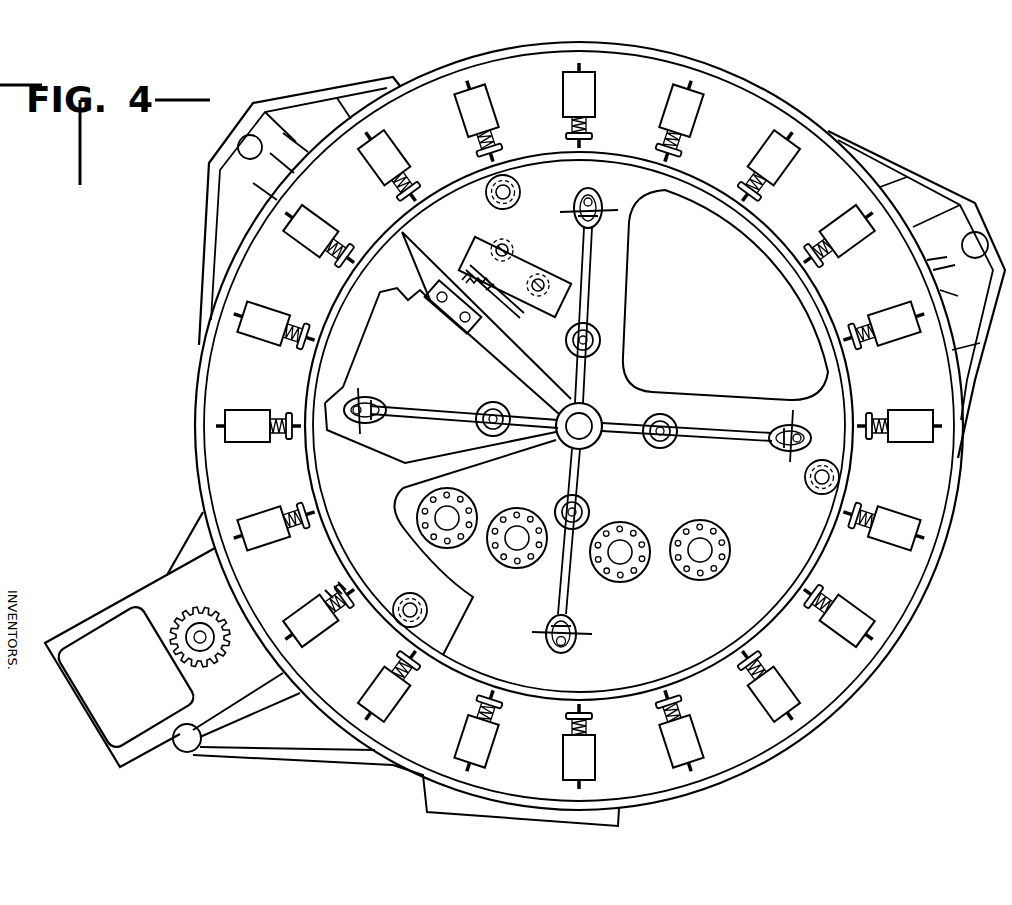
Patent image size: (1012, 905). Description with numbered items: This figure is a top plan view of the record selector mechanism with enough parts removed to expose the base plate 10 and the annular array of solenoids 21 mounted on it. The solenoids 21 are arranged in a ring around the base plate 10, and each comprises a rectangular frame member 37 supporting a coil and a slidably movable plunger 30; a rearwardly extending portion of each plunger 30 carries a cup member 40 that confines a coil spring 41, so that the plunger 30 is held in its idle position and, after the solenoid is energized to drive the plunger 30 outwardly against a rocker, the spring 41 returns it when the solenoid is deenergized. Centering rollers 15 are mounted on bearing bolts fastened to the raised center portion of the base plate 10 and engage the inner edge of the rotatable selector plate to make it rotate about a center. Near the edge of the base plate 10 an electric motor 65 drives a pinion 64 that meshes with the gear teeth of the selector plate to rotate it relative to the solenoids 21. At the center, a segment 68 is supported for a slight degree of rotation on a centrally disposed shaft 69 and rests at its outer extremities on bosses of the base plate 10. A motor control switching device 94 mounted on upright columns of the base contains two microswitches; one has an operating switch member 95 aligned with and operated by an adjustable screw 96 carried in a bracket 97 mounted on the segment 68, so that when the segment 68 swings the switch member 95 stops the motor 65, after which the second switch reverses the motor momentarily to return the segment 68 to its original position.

The base plate 10 is at (204, 333).
The centering rollers 15 is at (521, 192).
The solenoids 21 is at (598, 108).
The plunger 30 is at (348, 587).
The rectangular frame member 37 is at (313, 625).
The cup member 40 is at (336, 583).
The coil spring 41 is at (326, 592).
The pinion 64 is at (199, 612).
The electric motor 65 is at (128, 671).
The segment 68 is at (528, 367).
The shaft 69 is at (594, 421).
The motor control switching device 94 is at (526, 270).
The operating switch member 95 is at (502, 306).
The adjustable screw 96 is at (468, 280).
The bracket 97 is at (472, 322).